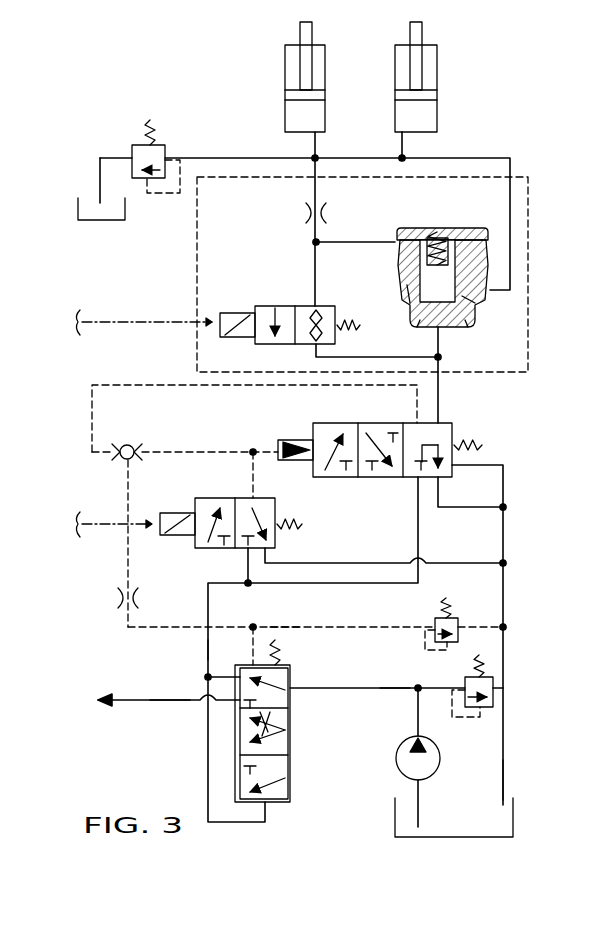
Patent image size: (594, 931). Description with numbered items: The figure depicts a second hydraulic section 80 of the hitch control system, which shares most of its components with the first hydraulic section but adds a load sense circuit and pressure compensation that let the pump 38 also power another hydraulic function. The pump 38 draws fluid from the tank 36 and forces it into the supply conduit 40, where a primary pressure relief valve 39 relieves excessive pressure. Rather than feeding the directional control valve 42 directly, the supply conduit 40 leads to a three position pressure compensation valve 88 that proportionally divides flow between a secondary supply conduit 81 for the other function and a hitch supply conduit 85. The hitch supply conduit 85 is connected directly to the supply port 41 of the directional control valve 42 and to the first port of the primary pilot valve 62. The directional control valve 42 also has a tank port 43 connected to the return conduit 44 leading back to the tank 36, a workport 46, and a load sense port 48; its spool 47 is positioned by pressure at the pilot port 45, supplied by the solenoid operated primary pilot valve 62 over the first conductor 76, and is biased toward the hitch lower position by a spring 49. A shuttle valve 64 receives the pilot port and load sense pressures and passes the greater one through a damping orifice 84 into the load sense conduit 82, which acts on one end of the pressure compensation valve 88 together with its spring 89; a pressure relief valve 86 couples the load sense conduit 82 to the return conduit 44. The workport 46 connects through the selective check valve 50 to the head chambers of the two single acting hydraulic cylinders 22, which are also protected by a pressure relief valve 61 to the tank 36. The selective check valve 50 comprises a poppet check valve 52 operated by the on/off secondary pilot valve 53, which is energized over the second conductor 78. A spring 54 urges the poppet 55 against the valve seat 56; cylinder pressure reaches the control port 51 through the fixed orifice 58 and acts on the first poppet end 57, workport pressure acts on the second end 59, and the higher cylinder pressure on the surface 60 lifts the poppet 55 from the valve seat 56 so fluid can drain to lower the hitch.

The second hydraulic section 80 is at (178, 80).
The hydraulic cylinders 22 is at (285, 56).
The pressure relief valve 61 is at (133, 150).
The tank 36 is at (118, 222).
The selective check valve 50 is at (194, 259).
The fixed orifice 58 is at (308, 212).
The secondary pilot valve 53 is at (282, 304).
The second conductor 78 is at (166, 330).
The control port 51 is at (405, 246).
The poppet check valve 52 is at (399, 232).
The spring 54 is at (440, 230).
The first poppet end 57 is at (458, 230).
The poppet 55 is at (410, 292).
The surface 60 is at (471, 298).
The second end 59 is at (427, 326).
The valve seat 56 is at (458, 326).
The shuttle valve 64 is at (130, 440).
The pilot port 45 is at (281, 440).
The workport 46 is at (441, 420).
The spool 47 is at (366, 430).
The load sense port 48 is at (418, 428).
The spring 49 is at (482, 446).
The supply port 41 is at (416, 480).
The directional control valve 42 is at (350, 480).
The tank port 43 is at (442, 480).
The primary pilot valve 62 is at (210, 498).
The first conductor 76 is at (107, 532).
The damping orifice 84 is at (136, 602).
The load sense conduit 82 is at (290, 627).
The hitch supply conduit 85 is at (206, 646).
The secondary supply conduit 81 is at (166, 706).
The pressure relief valve 86 is at (447, 616).
The pressure compensation valve 88 is at (290, 746).
The spring 89 is at (285, 664).
The supply conduit 40 is at (408, 684).
The pump 38 is at (397, 752).
The primary pressure relief valve 39 is at (483, 714).
The return conduit 44 is at (503, 776).